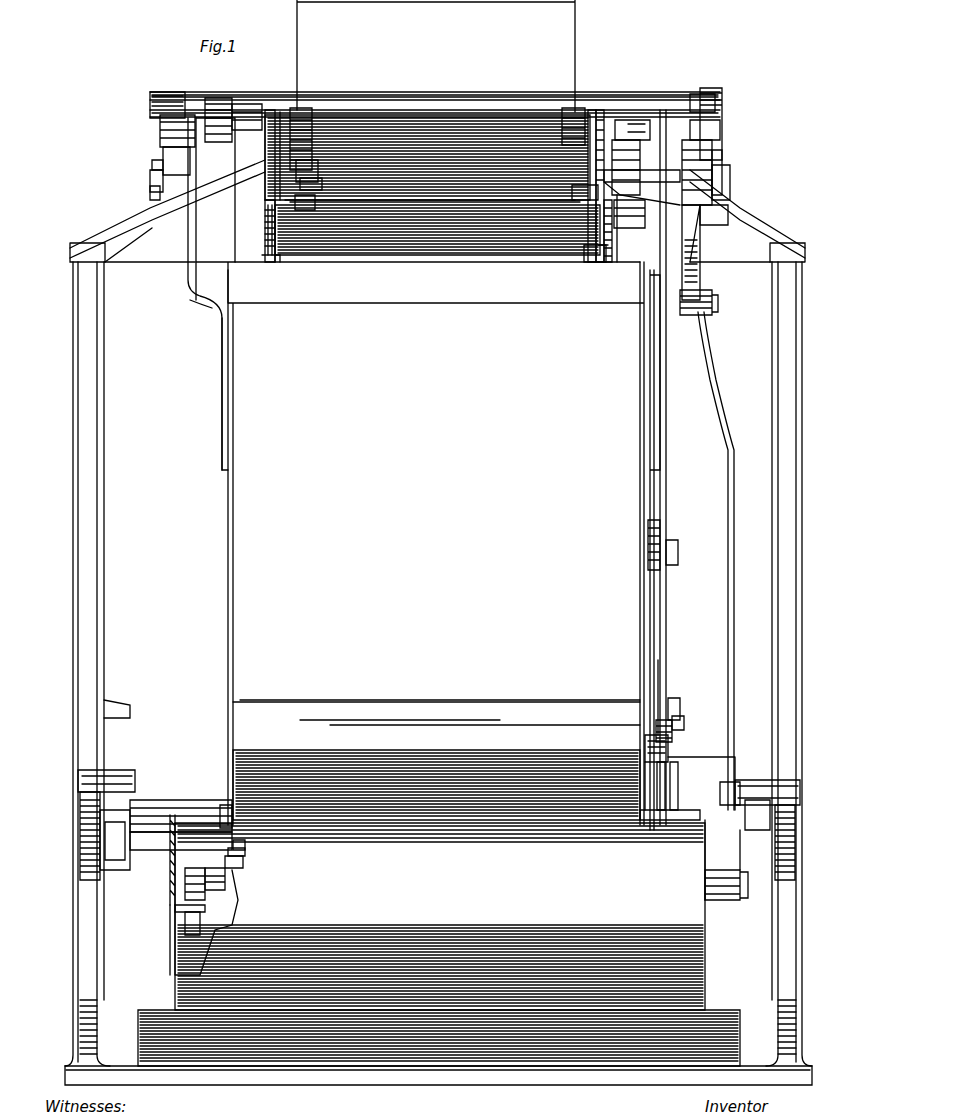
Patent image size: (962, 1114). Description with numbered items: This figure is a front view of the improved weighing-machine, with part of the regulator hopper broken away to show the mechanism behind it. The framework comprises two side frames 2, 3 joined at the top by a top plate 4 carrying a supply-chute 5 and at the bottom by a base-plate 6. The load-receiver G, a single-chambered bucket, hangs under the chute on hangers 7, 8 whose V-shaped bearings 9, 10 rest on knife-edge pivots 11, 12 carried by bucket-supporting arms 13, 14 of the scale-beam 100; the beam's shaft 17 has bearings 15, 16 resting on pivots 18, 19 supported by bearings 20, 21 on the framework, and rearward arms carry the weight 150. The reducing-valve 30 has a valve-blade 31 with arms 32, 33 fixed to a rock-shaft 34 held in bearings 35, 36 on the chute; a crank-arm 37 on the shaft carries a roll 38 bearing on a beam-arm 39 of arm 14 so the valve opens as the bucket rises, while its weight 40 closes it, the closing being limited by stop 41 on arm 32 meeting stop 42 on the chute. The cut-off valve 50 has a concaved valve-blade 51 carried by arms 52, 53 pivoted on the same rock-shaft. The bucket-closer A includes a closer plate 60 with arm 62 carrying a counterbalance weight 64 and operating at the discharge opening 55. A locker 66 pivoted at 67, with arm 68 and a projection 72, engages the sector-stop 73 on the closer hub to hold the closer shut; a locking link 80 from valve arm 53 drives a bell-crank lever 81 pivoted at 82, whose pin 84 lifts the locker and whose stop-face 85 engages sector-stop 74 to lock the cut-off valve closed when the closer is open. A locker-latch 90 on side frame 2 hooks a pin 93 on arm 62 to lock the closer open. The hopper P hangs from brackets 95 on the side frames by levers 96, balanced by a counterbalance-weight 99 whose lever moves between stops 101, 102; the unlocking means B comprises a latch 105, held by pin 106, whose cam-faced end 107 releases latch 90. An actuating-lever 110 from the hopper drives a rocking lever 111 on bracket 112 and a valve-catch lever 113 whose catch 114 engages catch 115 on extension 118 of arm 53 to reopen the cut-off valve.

The side frame 2 is at (84, 583).
The side frame 3 is at (800, 578).
The top plate 4 is at (728, 222).
The supply-chute 5 is at (553, 50).
The base-plate 6 is at (615, 1082).
The hanger 7 is at (652, 297).
The hanger 8 is at (214, 300).
The V-shaped bearing 9 is at (713, 143).
The V-shaped bearing 10 is at (168, 147).
The pivot 11 is at (712, 157).
The pivot 12 is at (158, 162).
The bucket-supporting arm 13 is at (717, 100).
The bucket-supporting arm 14 is at (170, 107).
The V-shaped bearing 15 is at (714, 167).
The V-shaped bearing 16 is at (158, 170).
The shaft 17 is at (620, 92).
The pivot 18 is at (152, 186).
The pivot 19 is at (724, 180).
The bearing 20 is at (155, 196).
The bearing 21 is at (740, 202).
The reducing-valve 30 is at (470, 245).
The valve-blade 31 is at (510, 243).
The valve-arm 32 is at (300, 195).
The valve-arm 33 is at (578, 192).
The rock-shaft 34 is at (438, 132).
The bearing 35 is at (563, 118).
The bearing 36 is at (302, 112).
The crank-arm 37 is at (236, 104).
The roll 38 is at (215, 98).
The beam-arm 39 is at (200, 127).
The weight 40 is at (457, 210).
The stop 41 is at (302, 172).
The stop 42 is at (322, 168).
The cut-off valve 50 is at (272, 256).
The valve-blade 51 is at (267, 237).
The arm 52 is at (265, 218).
The arm 53 is at (590, 250).
The discharge opening 55 is at (246, 866).
The closer plate 60 is at (246, 852).
The arm 62 is at (246, 843).
The weight 64 is at (225, 800).
The locker 66 is at (683, 715).
The pivotal device 67 is at (670, 747).
The projecting arm 68 is at (676, 698).
The projection 72 is at (668, 768).
The sector-stop 73 is at (645, 807).
The sector-stop 74 is at (680, 790).
The locking link 80 is at (632, 138).
The bell-crank lever 81 is at (655, 500).
The pivotal device 82 is at (678, 550).
The pin 84 is at (684, 720).
The stop-face 85 is at (686, 757).
The locker-latch 90 is at (212, 890).
The pin 93 is at (233, 805).
The bracket 95 is at (104, 774).
The lever 96 is at (135, 888).
The counterbalance-weight 99 is at (152, 802).
The scale-beam 100 is at (668, 94).
The stop 101 is at (110, 838).
The stop 102 is at (120, 705).
The latch 105 is at (176, 912).
The pin 106 is at (182, 930).
The cam-faced end 107 is at (192, 850).
The actuating-lever 110 is at (728, 444).
The rocking lever 111 is at (705, 292).
The bracket 112 is at (700, 258).
The valve-catch lever 113 is at (620, 235).
The catch 114 is at (622, 215).
The catch 115 is at (598, 212).
The extension 118 is at (560, 196).
The weight 150 is at (232, 157).
The bucket-closer A is at (202, 791).
The unlocking means B is at (247, 879).
The space C is at (685, 609).
The load-receiver G is at (226, 637).
The hopper P is at (439, 944).